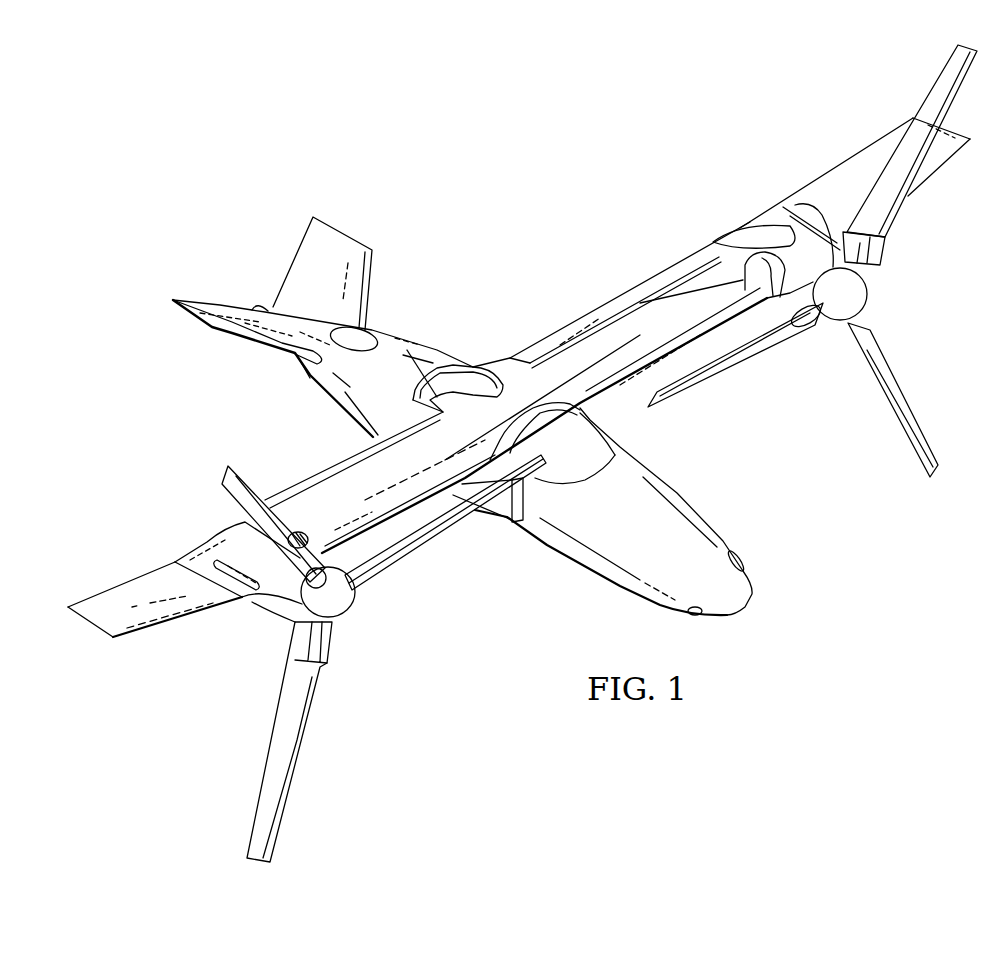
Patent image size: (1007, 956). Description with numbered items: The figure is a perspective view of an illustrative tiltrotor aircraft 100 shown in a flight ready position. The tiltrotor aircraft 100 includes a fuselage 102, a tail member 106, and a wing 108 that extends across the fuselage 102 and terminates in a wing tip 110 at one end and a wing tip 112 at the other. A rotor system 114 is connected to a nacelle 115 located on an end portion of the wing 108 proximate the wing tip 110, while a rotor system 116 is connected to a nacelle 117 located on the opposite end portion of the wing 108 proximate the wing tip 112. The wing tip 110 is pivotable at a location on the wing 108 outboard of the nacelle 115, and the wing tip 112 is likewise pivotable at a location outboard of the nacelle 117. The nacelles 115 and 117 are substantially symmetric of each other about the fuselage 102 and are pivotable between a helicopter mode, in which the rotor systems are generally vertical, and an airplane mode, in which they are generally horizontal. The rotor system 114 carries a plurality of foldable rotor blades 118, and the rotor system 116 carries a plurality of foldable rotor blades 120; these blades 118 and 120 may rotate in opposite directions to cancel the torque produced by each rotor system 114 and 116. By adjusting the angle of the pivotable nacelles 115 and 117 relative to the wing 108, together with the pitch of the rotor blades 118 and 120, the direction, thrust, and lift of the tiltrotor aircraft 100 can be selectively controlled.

The tiltrotor aircraft 100 is at (391, 137).
The fuselage 102 is at (680, 497).
The tail member 106 is at (308, 252).
The wing 108 is at (628, 315).
The wing tip 110 is at (150, 630).
The wing tip 112 is at (947, 165).
The rotor system 114 is at (378, 606).
The nacelle 115 is at (280, 600).
The rotor system 116 is at (882, 303).
The nacelle 117 is at (810, 253).
The foldable rotor blades 118 is at (238, 485).
The foldable rotor blades 120 is at (930, 105).